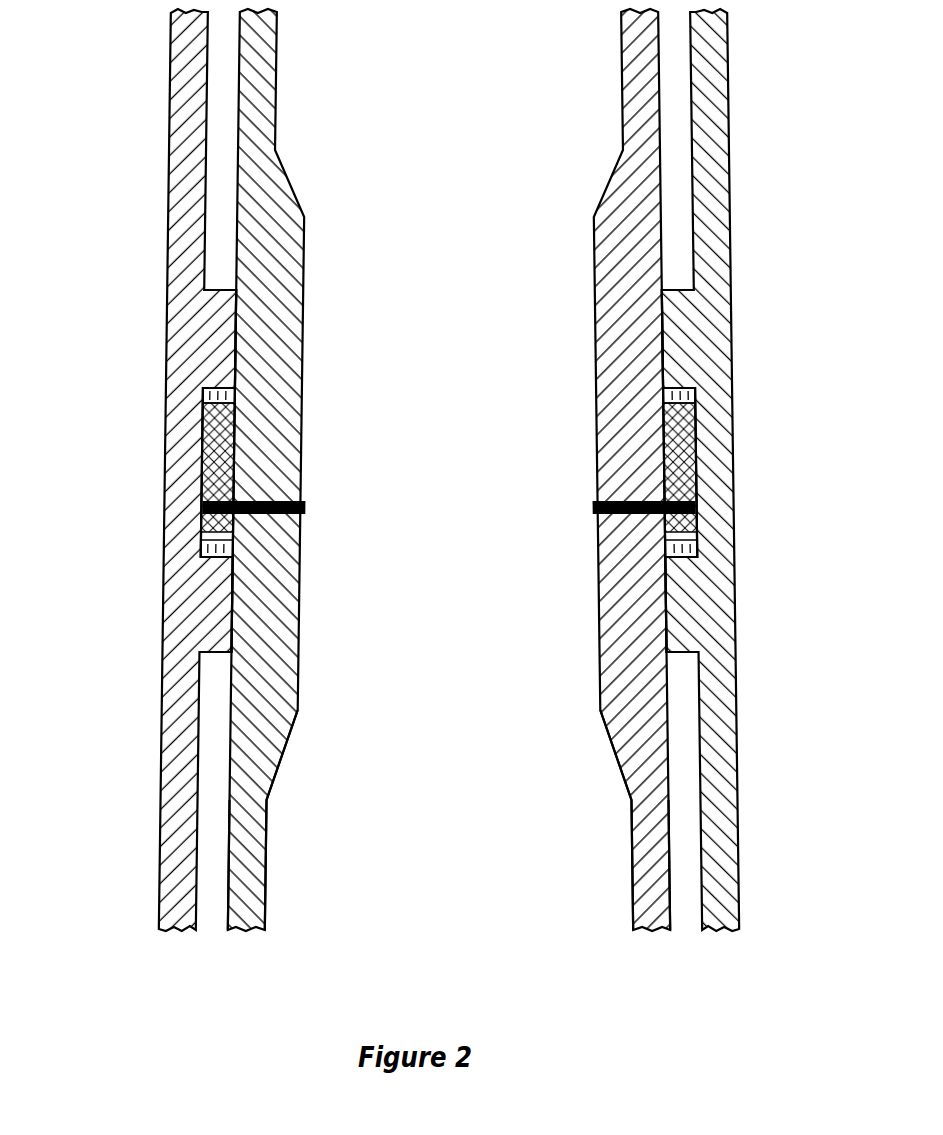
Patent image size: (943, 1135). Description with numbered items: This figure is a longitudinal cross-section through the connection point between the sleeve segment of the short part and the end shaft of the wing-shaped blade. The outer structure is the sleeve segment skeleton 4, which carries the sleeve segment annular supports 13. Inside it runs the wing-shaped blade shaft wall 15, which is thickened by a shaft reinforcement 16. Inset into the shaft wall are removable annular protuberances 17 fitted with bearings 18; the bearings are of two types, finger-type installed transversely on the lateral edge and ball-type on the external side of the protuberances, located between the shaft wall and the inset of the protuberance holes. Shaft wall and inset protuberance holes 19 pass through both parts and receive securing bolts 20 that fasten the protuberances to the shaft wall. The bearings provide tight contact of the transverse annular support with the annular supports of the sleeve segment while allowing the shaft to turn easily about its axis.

The sleeve segment skeleton 4 is at (168, 202).
The sleeve segment annular supports 13 is at (220, 330).
The wing-shaped blade shaft wall 15 is at (268, 836).
The shaft reinforcement 16 is at (302, 337).
The inset removable annular protuberances 17 is at (206, 467).
The bearings 18 is at (205, 392).
The shaft wall and inset protuberance holes 19 is at (210, 432).
The securing bolts 20 is at (306, 513).